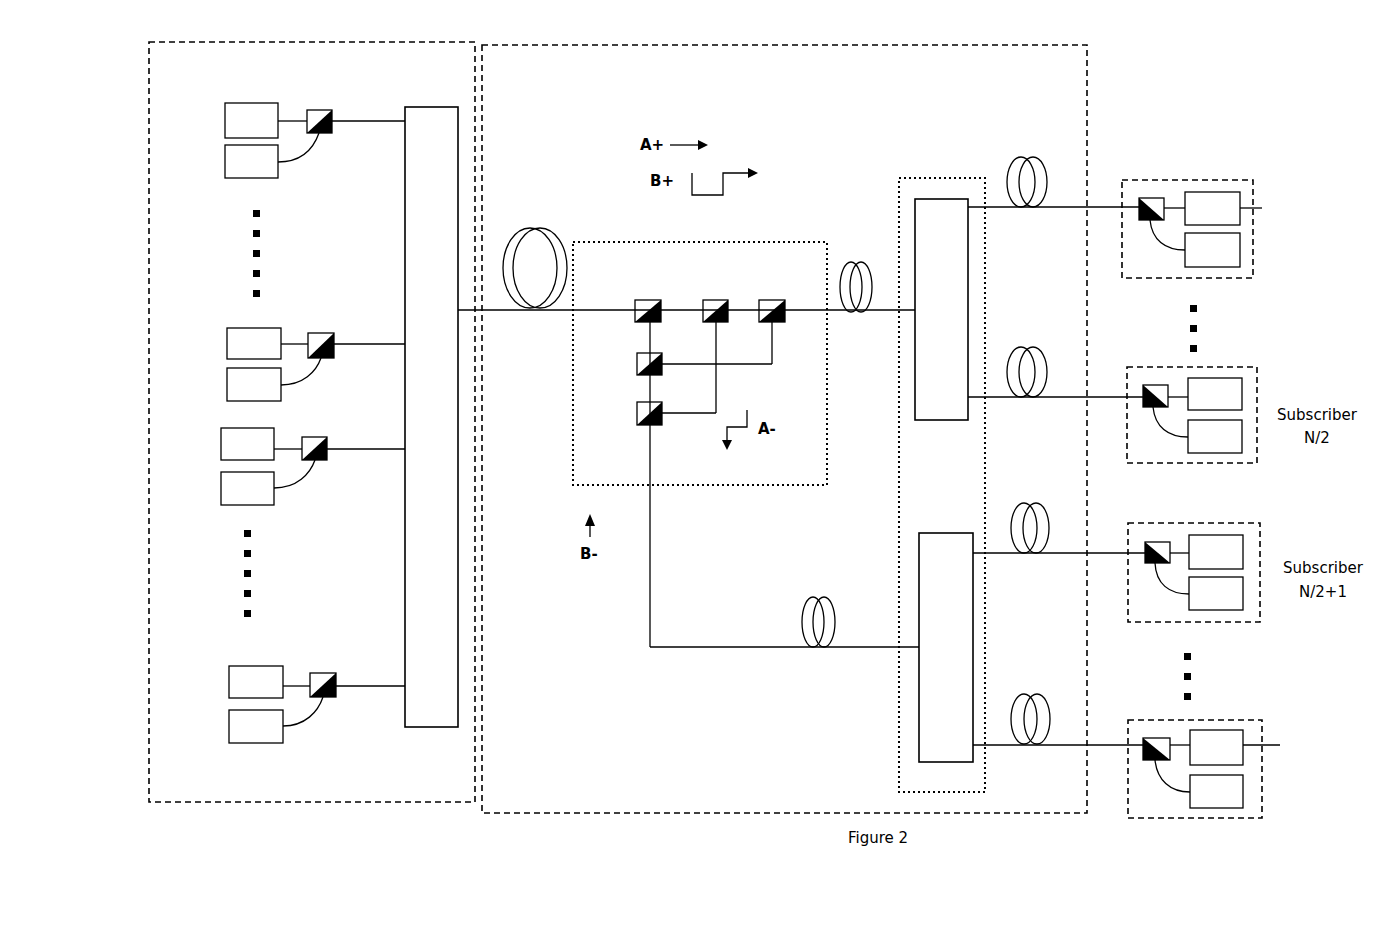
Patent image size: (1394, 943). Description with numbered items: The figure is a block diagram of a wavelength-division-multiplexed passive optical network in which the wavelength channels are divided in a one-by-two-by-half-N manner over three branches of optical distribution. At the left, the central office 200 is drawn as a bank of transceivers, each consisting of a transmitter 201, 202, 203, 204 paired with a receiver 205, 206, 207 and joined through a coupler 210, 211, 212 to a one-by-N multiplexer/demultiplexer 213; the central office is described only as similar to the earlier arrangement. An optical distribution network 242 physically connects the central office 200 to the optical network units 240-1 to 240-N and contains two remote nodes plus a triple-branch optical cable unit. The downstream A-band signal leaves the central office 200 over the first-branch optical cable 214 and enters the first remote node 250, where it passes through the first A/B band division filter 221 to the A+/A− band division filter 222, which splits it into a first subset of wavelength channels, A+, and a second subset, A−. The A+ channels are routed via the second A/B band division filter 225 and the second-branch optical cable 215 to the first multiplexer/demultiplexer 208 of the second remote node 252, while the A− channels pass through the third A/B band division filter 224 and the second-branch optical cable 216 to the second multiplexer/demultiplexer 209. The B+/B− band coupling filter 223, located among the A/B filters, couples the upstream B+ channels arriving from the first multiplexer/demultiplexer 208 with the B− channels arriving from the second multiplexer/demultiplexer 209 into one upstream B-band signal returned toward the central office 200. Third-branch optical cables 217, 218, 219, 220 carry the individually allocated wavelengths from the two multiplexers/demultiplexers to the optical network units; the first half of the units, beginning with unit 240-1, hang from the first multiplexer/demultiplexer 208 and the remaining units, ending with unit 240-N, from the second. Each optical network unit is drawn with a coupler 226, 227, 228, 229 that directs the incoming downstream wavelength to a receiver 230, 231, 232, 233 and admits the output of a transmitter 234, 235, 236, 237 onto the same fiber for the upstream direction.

The central office 200 is at (312, 437).
The transmitter Tx{B} 201 is at (240, 103).
The transmitter Tx{B} 202 is at (227, 342).
The transmitter Tx{B} 203 is at (221, 444).
The transmitter Tx{B} 204 is at (247, 666).
The receiver Rx 205 is at (225, 158).
The receiver Rx 206 is at (227, 385).
The receiver Rx 207 is at (221, 488).
The first multiplexer/demultiplexer 208 is at (229, 727).
The second multiplexer/demultiplexer 209 is at (319, 110).
The coupler 210 is at (318, 333).
The coupler 211 is at (315, 437).
The coupler 212 is at (322, 673).
The 1x(N) MUX/DMUX 213 is at (424, 107).
The first-branch optical cable 214 is at (545, 230).
The second-branch optical cable 215 is at (858, 262).
The second-branch optical cable 216 is at (822, 598).
The third-branch optical cable 217 is at (1030, 157).
The third-branch optical cable 218 is at (1030, 347).
The third-branch optical cable 219 is at (1030, 503).
The third-branch optical cable 220 is at (1030, 695).
The first A/B band division filter 221 is at (635, 318).
The A+/A− band division filter 222 is at (732, 306).
The B+/B− band coupling filter 223 is at (637, 372).
The third A/B band division filter 224 is at (640, 424).
The second A/B band division filter 225 is at (778, 322).
The subscriber coupler 226 is at (1147, 198).
The subscriber coupler 227 is at (1148, 407).
The subscriber coupler 228 is at (1150, 563).
The subscriber coupler 229 is at (1152, 738).
The subscriber receiver Rx 230 is at (1225, 192).
The subscriber receiver Rx 231 is at (1212, 378).
The subscriber receiver Rx 232 is at (1215, 535).
The subscriber receiver Rx 233 is at (1218, 730).
The subscriber transmitter Tx{A} 234 is at (1200, 267).
The subscriber transmitter Tx{A} 235 is at (1242, 450).
The subscriber transmitter Tx{A} 236 is at (1230, 610).
The subscriber transmitter Tx{A} 237 is at (1210, 808).
The first optical network unit 240-1 is at (1262, 208).
The Nth optical network unit 240-N is at (1280, 745).
The optical distribution network 242 is at (784, 447).
The first remote node 250 is at (700, 430).
The second remote node 252 is at (878, 778).